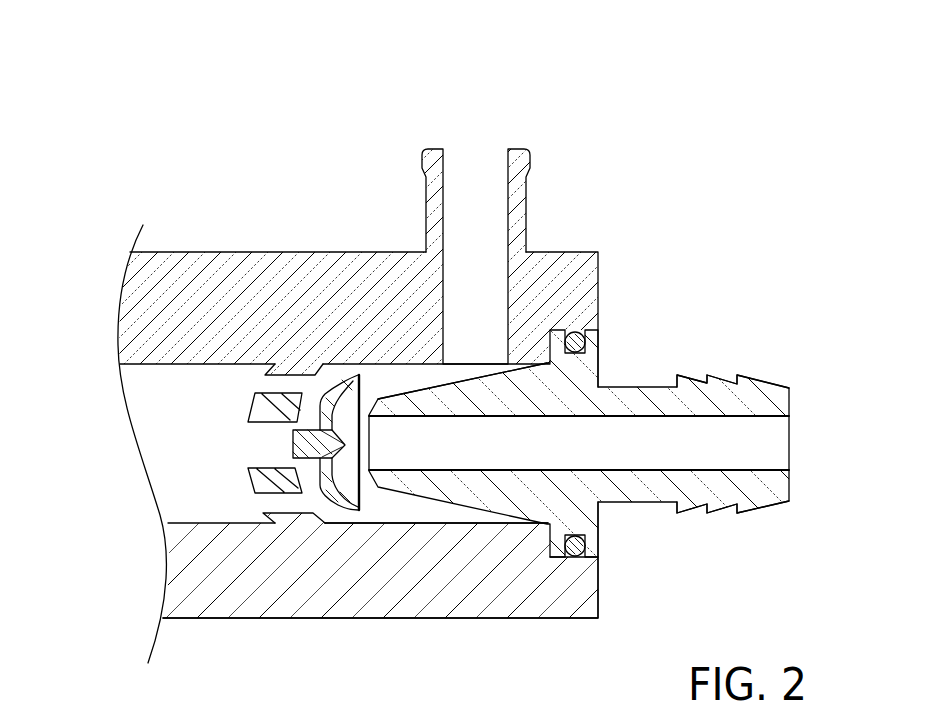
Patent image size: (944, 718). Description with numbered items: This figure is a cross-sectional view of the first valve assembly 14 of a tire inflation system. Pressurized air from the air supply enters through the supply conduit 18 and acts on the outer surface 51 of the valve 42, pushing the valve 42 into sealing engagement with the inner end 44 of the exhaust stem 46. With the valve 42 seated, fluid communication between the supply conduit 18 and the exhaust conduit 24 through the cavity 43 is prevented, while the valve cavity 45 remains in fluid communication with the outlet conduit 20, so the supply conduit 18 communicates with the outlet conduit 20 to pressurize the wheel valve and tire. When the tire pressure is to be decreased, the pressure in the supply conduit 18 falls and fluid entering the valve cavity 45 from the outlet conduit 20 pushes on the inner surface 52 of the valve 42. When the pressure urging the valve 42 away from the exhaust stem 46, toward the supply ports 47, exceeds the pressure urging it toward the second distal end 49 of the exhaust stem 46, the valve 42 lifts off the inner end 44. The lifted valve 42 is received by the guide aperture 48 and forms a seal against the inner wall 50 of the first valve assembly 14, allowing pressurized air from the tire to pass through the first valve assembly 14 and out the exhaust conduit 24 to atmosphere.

The first valve assembly 14 is at (92, 54).
The supply conduit 18 is at (126, 378).
The outlet conduit 20 is at (475, 178).
The exhaust conduit 24 is at (805, 443).
The valve 42 is at (312, 477).
The cavity 43 is at (784, 457).
The inner end 44 is at (376, 492).
The valve cavity 45 is at (404, 383).
The exhaust stem 46 is at (768, 515).
The supply ports 47 is at (256, 368).
The guide aperture 48 is at (298, 468).
The second distal end 49 is at (790, 408).
The inner wall 50 is at (435, 525).
The outer surface 51 is at (317, 393).
The inner surface 52 is at (360, 376).